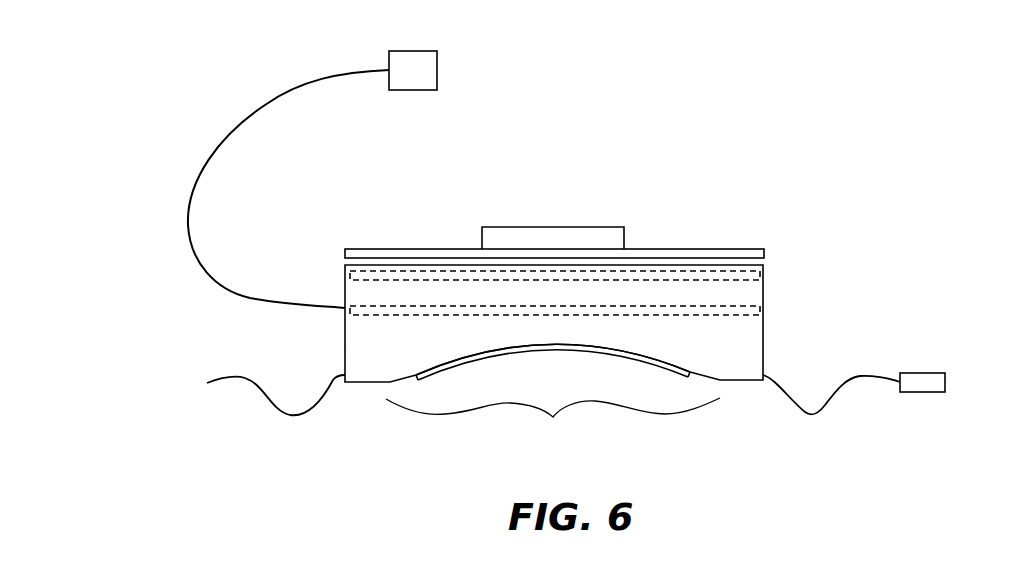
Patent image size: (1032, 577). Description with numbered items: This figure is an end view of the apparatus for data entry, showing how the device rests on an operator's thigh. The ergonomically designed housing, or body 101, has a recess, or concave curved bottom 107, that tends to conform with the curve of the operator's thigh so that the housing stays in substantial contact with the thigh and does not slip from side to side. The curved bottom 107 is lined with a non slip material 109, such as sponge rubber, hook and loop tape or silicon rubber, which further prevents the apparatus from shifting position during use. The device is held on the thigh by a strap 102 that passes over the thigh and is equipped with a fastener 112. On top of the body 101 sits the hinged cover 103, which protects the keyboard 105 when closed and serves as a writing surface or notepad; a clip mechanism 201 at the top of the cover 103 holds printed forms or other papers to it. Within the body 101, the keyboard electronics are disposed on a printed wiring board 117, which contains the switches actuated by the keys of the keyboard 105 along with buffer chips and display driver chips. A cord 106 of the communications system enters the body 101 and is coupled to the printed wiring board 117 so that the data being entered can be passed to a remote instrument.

The body 101 is at (345, 342).
The strap 102 is at (814, 415).
The cover 103 is at (722, 249).
The keyboard 105 is at (388, 280).
The cord 106 is at (303, 78).
The curved bottom 107 is at (553, 421).
The non slip material 109 is at (505, 352).
The fastener 112 is at (921, 373).
The printed wiring board 117 is at (740, 315).
The clip mechanism 201 is at (590, 227).